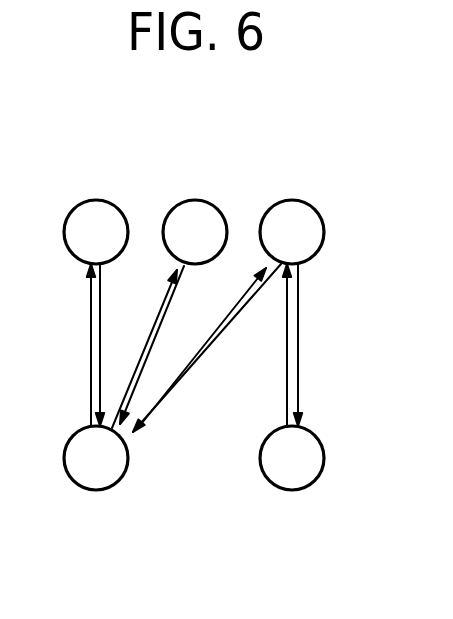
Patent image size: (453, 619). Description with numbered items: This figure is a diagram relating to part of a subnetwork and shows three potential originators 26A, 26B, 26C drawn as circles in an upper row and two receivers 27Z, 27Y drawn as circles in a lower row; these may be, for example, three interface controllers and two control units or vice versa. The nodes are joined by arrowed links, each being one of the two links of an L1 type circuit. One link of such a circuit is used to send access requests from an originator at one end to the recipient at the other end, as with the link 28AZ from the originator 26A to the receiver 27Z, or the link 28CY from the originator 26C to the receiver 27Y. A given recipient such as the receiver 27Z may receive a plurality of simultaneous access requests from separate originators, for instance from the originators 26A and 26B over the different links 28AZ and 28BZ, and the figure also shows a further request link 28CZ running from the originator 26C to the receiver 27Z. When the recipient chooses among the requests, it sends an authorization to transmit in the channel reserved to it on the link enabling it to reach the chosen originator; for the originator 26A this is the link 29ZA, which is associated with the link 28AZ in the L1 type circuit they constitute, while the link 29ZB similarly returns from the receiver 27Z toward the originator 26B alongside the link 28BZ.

The originator 26A is at (94, 212).
The originator 26B is at (193, 212).
The originator 26C is at (291, 212).
The receiver 27Z is at (93, 480).
The receiver 27Y is at (289, 480).
The link 29ZA is at (91, 310).
The link 28AZ is at (100, 352).
The link 29ZB is at (160, 311).
The link 28BZ is at (168, 306).
The link 28CZ is at (171, 389).
The link 28CY is at (298, 325).